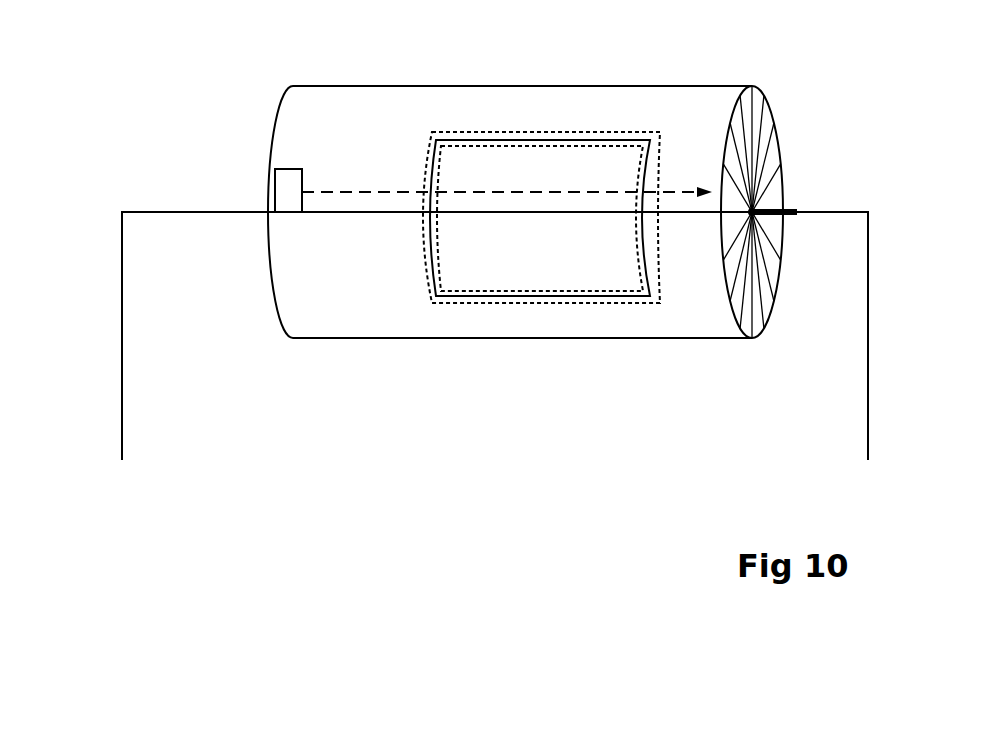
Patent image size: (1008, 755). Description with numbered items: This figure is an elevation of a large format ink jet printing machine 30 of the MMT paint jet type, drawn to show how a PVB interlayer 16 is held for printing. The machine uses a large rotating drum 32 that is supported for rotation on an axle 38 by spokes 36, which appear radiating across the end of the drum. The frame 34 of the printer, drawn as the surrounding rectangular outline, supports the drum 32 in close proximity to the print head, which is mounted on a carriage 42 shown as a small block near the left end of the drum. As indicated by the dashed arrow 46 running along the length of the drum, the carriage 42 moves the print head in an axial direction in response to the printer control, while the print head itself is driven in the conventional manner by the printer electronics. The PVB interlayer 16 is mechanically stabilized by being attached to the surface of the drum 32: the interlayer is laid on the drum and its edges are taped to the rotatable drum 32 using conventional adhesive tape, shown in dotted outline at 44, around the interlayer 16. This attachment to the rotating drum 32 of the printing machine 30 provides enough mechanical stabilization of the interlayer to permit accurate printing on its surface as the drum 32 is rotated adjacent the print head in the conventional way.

The PVB interlayer 16 is at (517, 270).
The printing machine 30 is at (240, 487).
The rotating drum 32 is at (713, 101).
The frame 34 is at (158, 350).
The spokes 36 is at (768, 150).
The axle 38 is at (765, 208).
The carriage 42 is at (270, 196).
The adhesive tape 44 is at (627, 300).
The arrow 46 is at (658, 188).